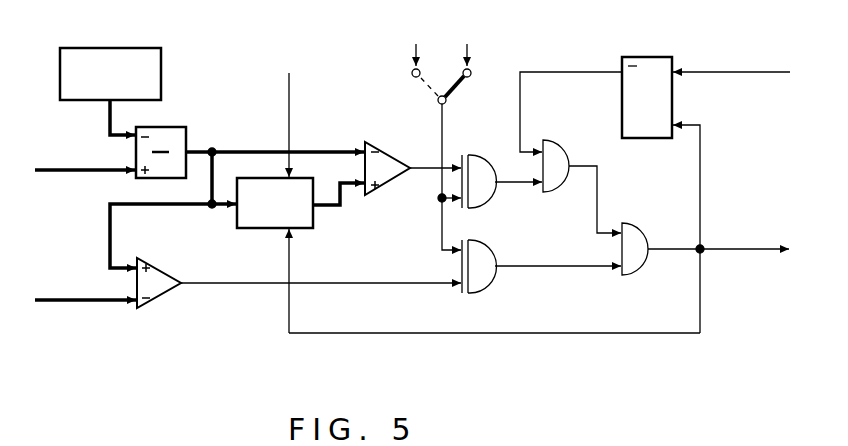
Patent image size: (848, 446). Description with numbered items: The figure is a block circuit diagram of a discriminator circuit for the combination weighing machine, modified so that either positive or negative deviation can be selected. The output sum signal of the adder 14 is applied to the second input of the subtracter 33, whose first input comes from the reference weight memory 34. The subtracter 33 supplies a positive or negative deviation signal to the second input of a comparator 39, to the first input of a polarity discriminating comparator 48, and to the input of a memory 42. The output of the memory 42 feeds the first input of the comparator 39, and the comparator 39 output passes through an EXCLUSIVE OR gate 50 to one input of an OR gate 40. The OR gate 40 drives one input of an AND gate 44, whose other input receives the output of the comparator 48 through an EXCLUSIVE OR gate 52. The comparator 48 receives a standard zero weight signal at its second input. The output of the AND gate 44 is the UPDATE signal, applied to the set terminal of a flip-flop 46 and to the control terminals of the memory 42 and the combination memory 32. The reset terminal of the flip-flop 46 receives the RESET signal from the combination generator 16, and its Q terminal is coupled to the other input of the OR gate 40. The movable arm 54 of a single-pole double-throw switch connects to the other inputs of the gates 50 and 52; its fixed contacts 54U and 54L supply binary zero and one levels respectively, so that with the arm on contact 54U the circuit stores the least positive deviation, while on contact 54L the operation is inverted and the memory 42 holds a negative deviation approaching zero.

The adder 14 is at (85, 158).
The combination generator 16 is at (732, 68).
The combination memory 32 is at (759, 245).
The subtracter 33 is at (187, 128).
The reference weight memory 34 is at (162, 73).
The comparator 39 is at (395, 190).
The OR gate 40 is at (562, 141).
The memory 42 is at (265, 230).
The AND gate 44 is at (640, 226).
The flip-flop 46 is at (645, 55).
The polarity discriminating comparator 48 is at (152, 300).
The EXCLUSIVE OR gate 50 is at (493, 200).
The EXCLUSIVE OR gate 52 is at (493, 284).
The movable arm 54 is at (447, 101).
The fixed contact 54L is at (412, 73).
The fixed contact 54U is at (472, 72).